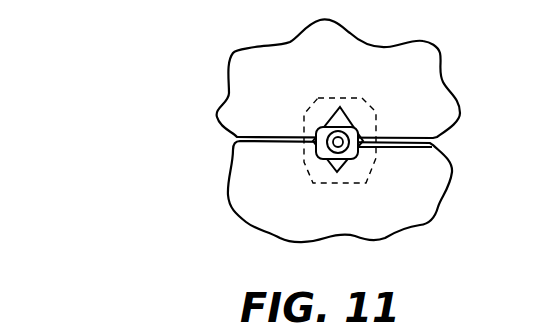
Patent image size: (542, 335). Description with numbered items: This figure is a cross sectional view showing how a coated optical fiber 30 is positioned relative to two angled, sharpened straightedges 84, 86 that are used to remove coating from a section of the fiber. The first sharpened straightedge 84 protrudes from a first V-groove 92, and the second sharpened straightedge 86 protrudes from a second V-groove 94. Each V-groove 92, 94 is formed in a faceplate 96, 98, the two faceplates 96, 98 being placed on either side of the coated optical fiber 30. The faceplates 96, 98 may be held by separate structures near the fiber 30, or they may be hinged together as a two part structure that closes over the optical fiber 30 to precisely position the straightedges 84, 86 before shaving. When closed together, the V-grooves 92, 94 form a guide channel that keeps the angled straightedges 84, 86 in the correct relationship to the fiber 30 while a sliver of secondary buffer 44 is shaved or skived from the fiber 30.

The coated optical fiber 30 is at (300, 127).
The secondary buffer 44 is at (318, 149).
The first sharpened straightedge 84 is at (345, 122).
The second sharpened straightedge 86 is at (343, 157).
The first V-groove 92 is at (360, 130).
The second V-groove 94 is at (356, 149).
The first faceplate 96 is at (413, 58).
The second faceplate 98 is at (267, 213).